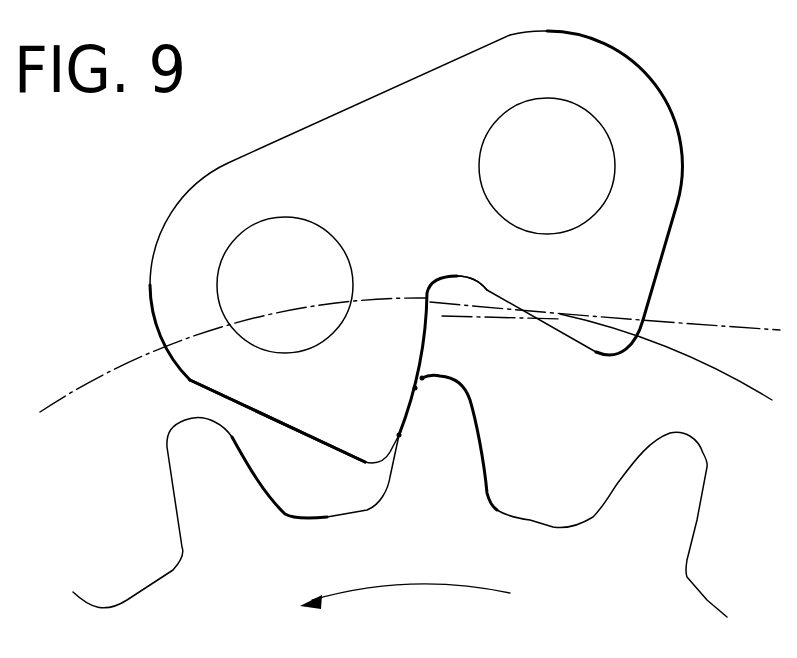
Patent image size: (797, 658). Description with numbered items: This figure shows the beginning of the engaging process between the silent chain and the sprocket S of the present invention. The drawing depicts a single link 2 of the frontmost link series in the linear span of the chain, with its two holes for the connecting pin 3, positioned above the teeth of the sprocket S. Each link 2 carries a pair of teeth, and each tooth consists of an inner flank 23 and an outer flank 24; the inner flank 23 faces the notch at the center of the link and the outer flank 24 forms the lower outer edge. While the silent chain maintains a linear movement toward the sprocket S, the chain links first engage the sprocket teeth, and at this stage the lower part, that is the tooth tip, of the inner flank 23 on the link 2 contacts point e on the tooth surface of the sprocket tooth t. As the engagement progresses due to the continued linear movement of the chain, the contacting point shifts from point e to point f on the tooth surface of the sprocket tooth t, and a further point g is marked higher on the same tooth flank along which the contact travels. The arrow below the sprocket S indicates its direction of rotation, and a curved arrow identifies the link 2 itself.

The link 2 is at (630, 32).
The connecting pin 3 is at (287, 237).
The inner flank 23 is at (423, 327).
The outer flank 24 is at (293, 437).
The point e is at (408, 438).
The point f is at (419, 401).
The contact point g is at (428, 366).
The sprocket tooth t is at (470, 473).
The sprocket S is at (690, 608).